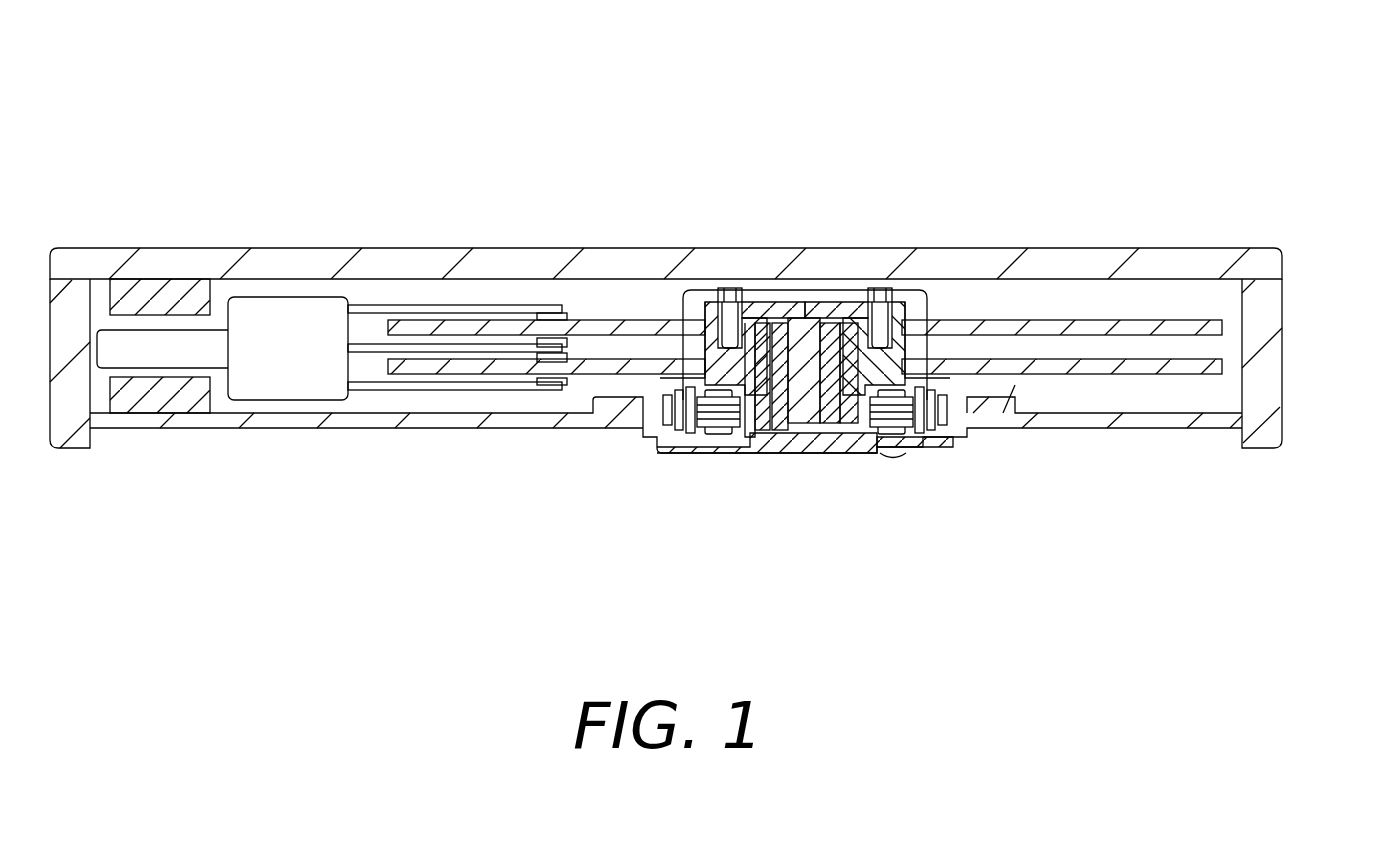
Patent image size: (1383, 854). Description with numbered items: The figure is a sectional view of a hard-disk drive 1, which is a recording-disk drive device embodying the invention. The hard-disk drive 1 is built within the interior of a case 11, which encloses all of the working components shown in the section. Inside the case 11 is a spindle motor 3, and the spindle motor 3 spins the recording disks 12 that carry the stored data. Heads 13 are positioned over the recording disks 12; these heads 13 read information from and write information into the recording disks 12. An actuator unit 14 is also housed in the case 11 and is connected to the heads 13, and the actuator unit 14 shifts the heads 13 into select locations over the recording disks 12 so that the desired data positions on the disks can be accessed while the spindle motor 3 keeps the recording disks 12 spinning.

The hard-disk drive 1 is at (1163, 210).
The spindle motor 3 is at (983, 468).
The case 11 is at (1320, 330).
The recording disks 12 is at (1167, 330).
The heads 13 is at (553, 316).
The actuator unit 14 is at (168, 289).